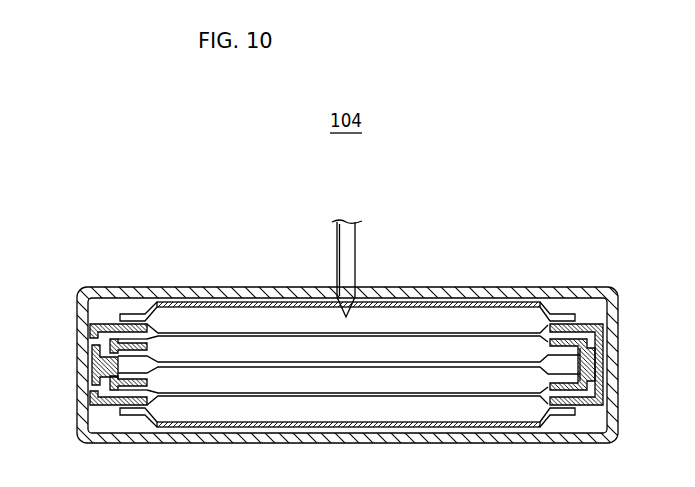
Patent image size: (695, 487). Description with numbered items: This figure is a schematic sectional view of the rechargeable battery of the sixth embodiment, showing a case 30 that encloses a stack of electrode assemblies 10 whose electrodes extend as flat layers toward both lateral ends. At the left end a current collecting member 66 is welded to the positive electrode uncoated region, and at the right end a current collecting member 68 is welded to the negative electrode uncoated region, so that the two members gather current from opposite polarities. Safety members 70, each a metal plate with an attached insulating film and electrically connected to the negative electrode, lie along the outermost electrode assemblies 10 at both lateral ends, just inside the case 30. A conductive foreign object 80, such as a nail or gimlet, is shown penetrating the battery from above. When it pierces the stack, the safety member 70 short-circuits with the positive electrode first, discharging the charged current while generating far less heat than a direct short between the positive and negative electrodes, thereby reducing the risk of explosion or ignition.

The electrode assembly 10 is at (250, 326).
The case 30 is at (462, 292).
The current collecting member 66 is at (95, 363).
The current collecting member 68 is at (602, 361).
The safety member 70 is at (512, 302).
The conductive foreign object 80 is at (355, 244).